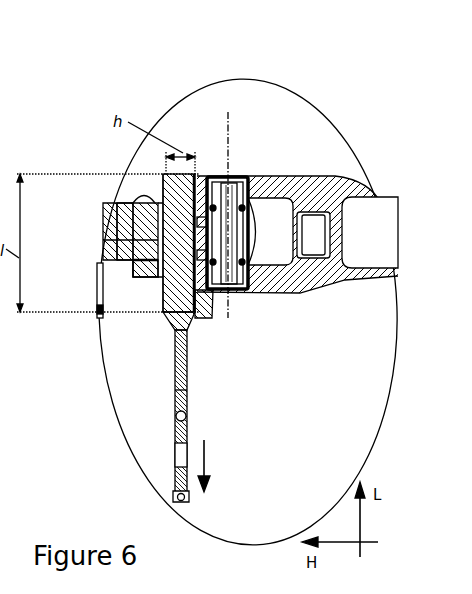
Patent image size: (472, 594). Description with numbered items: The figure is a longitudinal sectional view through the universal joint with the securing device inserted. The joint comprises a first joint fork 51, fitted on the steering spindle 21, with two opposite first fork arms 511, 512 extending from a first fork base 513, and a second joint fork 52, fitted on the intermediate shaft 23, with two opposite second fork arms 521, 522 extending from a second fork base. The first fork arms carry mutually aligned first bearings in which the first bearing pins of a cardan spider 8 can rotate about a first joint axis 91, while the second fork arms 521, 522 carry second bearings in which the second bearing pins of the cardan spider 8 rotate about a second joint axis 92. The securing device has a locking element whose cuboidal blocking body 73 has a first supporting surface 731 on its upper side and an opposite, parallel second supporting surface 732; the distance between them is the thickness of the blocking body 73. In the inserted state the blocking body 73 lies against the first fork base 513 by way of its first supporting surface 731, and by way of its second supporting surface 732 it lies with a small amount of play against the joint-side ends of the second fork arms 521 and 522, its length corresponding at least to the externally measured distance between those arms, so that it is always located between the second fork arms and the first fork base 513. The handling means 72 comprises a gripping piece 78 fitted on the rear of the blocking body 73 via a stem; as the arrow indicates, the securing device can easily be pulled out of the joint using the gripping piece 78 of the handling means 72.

The cardan spider 8 is at (346, 190).
The steering spindle 21 is at (106, 239).
The intermediate shaft 23 is at (358, 238).
The first joint fork 51 is at (103, 196).
The second joint fork 52 is at (333, 263).
The handling means 72 is at (176, 392).
The blocking body 73 is at (190, 270).
The gripping piece 78 is at (175, 496).
The first joint axis 91 is at (238, 177).
The second joint axis 92 is at (227, 113).
The first fork arm 511 is at (185, 239).
The first fork arm 512 is at (160, 246).
The first fork base 513 is at (112, 221).
The second fork arm 521 is at (286, 178).
The second fork arm 522 is at (280, 283).
The first supporting surface 731 is at (193, 240).
The second supporting surface 732 is at (198, 306).